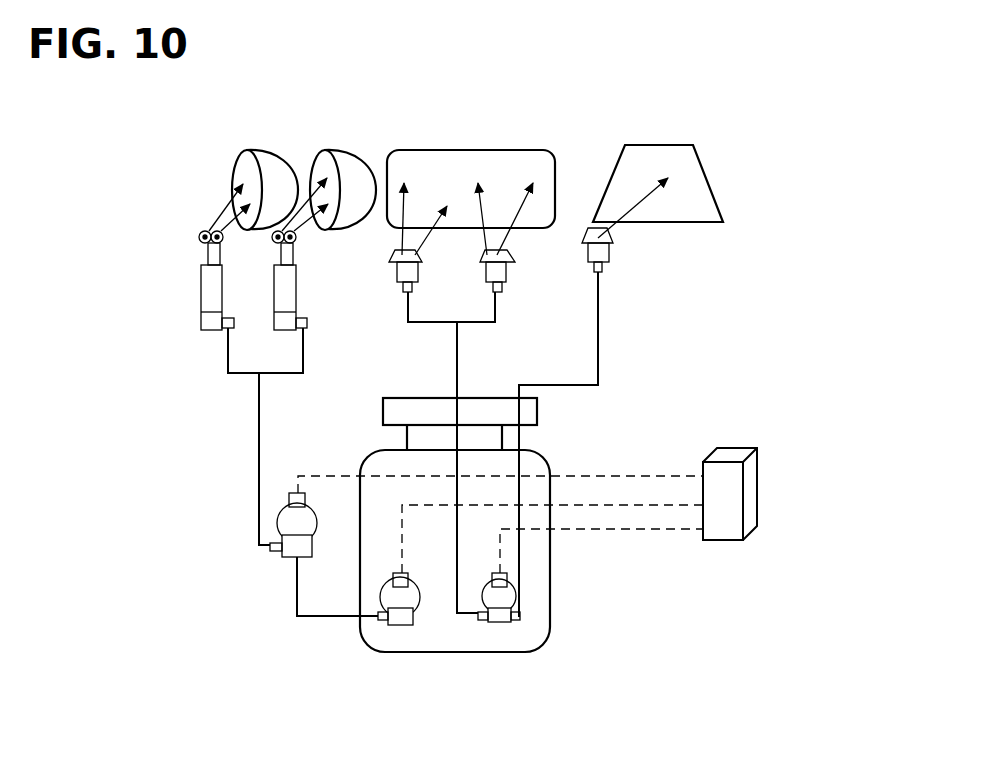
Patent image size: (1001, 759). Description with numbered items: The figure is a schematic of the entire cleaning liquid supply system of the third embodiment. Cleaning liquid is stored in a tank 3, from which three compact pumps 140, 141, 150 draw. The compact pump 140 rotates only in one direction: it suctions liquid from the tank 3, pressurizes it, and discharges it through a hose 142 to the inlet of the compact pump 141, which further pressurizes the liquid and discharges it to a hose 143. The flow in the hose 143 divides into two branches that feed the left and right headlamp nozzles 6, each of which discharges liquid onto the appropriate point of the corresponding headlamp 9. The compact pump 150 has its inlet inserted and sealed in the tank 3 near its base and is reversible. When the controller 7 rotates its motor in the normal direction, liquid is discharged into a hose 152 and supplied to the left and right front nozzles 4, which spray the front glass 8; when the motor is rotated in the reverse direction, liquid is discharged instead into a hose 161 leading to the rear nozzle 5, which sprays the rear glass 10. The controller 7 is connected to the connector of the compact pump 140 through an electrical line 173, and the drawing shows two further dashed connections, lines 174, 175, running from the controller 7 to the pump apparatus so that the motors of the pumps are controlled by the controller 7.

The tank 3 is at (550, 612).
The front nozzles 4 is at (487, 258).
The rear nozzle 5 is at (605, 252).
The headlamp nozzles 6 is at (283, 250).
The controller 7 is at (750, 492).
The front glass 8 is at (497, 170).
The headlamp 9 is at (245, 155).
The rear glass 10 is at (652, 168).
The compact pump 140 is at (400, 625).
The compact pump 141 is at (280, 523).
The hose 142 is at (320, 617).
The hose 143 is at (258, 455).
The compact pump 150 is at (498, 622).
The hose 152 is at (458, 352).
The hose 161 is at (598, 328).
The electrical line 173 is at (592, 505).
The control signal line 174 is at (660, 475).
The control signal line 175 is at (650, 530).